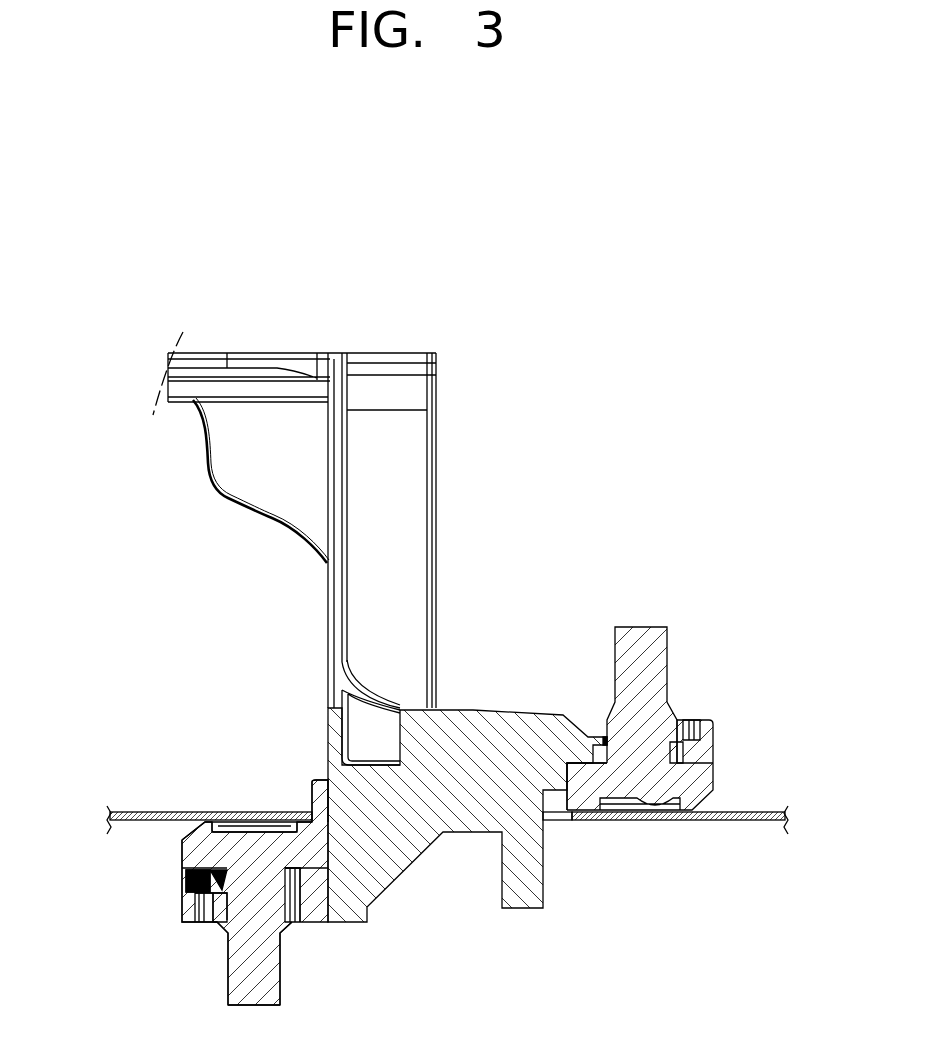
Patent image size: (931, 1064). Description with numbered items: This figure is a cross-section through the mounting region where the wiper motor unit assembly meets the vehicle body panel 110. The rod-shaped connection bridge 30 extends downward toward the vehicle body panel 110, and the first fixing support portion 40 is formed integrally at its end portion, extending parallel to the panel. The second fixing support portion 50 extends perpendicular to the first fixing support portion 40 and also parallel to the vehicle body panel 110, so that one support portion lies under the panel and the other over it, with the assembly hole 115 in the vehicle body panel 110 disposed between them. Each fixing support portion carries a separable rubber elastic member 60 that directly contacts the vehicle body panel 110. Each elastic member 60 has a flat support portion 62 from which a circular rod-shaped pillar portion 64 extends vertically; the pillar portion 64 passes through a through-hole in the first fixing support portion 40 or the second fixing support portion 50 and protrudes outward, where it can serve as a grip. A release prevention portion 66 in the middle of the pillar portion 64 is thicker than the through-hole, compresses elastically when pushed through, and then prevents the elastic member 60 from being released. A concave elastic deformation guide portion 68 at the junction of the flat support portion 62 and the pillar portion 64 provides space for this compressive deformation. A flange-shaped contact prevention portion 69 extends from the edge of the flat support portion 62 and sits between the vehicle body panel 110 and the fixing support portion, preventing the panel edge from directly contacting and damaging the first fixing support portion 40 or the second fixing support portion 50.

The connection bridge 30 is at (436, 483).
The first fixing support portion 40 is at (172, 900).
The second fixing support portion 50 is at (549, 702).
The elastic member 60 is at (671, 612).
The flat support portion 62 is at (200, 840).
The pillar portion 64 is at (667, 648).
The release prevention portion 66 is at (673, 720).
The elastic deformation guide portion 68 is at (680, 797).
The contact prevention portion 69 is at (313, 790).
The vehicle body panel 110 is at (753, 818).
The assembly hole 115 is at (557, 820).